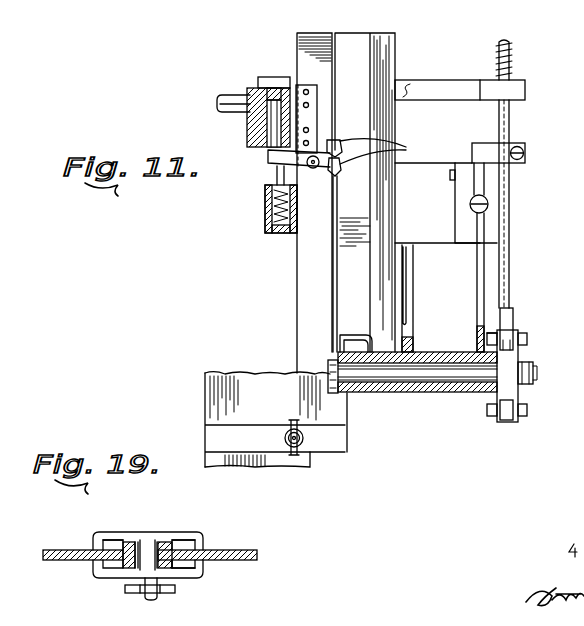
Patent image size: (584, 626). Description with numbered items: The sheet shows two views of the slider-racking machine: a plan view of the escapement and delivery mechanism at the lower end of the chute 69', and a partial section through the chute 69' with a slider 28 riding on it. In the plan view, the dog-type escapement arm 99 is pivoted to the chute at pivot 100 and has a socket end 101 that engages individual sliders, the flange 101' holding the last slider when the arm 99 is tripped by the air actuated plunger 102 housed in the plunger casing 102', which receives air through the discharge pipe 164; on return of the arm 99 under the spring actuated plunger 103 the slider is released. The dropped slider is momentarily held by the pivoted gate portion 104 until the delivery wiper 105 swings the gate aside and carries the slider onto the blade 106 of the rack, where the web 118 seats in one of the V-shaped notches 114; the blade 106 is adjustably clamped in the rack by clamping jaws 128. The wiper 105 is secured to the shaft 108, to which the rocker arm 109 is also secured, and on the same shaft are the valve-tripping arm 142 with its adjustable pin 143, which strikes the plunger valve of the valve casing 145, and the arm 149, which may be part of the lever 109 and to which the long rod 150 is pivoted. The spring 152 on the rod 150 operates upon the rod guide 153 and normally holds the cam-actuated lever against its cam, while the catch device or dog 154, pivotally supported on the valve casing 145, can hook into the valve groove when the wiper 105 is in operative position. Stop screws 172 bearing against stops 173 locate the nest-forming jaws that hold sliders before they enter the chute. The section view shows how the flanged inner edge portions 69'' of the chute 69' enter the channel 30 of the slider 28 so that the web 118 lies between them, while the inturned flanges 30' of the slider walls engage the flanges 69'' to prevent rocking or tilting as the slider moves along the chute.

In FIG. 11, the chute 69' is at (289, 196).
In FIG. 19, the chute 69' is at (162, 537).
In FIG. 11, the air actuated plunger 102 is at (243, 117).
In FIG. 11, the plunger casing 102' is at (251, 98).
In FIG. 11, the discharge pipe 164 is at (232, 100).
In FIG. 11, the spring actuated plunger 103 is at (275, 178).
In FIG. 11, the pivot 100 is at (333, 133).
In FIG. 11, the socket end 101 is at (350, 178).
In FIG. 11, the flange 101' is at (353, 134).
In FIG. 11, the escapement arm 99 is at (332, 186).
In FIG. 11, the separable fastener slider 28 is at (384, 150).
In FIG. 19, the separable fastener slider 28 is at (190, 532).
In FIG. 11, the pivoted gate portion 104 is at (348, 334).
In FIG. 11, the spring 152 is at (510, 63).
In FIG. 11, the rod guide 153 is at (527, 91).
In FIG. 11, the long rod 150 is at (510, 292).
In FIG. 11, the catch device 154 is at (481, 181).
In FIG. 11, the adjustable pin 143 is at (489, 205).
In FIG. 11, the valve-tripping arm 142 is at (486, 272).
In FIG. 11, the valve casing 145 is at (462, 231).
In FIG. 11, the shaft 108 is at (450, 370).
In FIG. 11, the delivery wiper 105 is at (343, 393).
In FIG. 11, the rocker arm 109 is at (519, 395).
In FIG. 11, the arm 149 is at (518, 346).
In FIG. 11, the stop screw 172 is at (540, 372).
In FIG. 11, the stop 173 is at (546, 328).
In FIG. 11, the blade 106 is at (212, 397).
In FIG. 11, the V-shaped notch 114 is at (268, 375).
In FIG. 11, the clamping jaw 128 is at (307, 449).
In FIG. 19, the flanged inner edge portion 69'' is at (147, 528).
In FIG. 19, the inturned flange 30' is at (179, 542).
In FIG. 19, the channel 30 is at (187, 588).
In FIG. 19, the web 118 is at (135, 560).